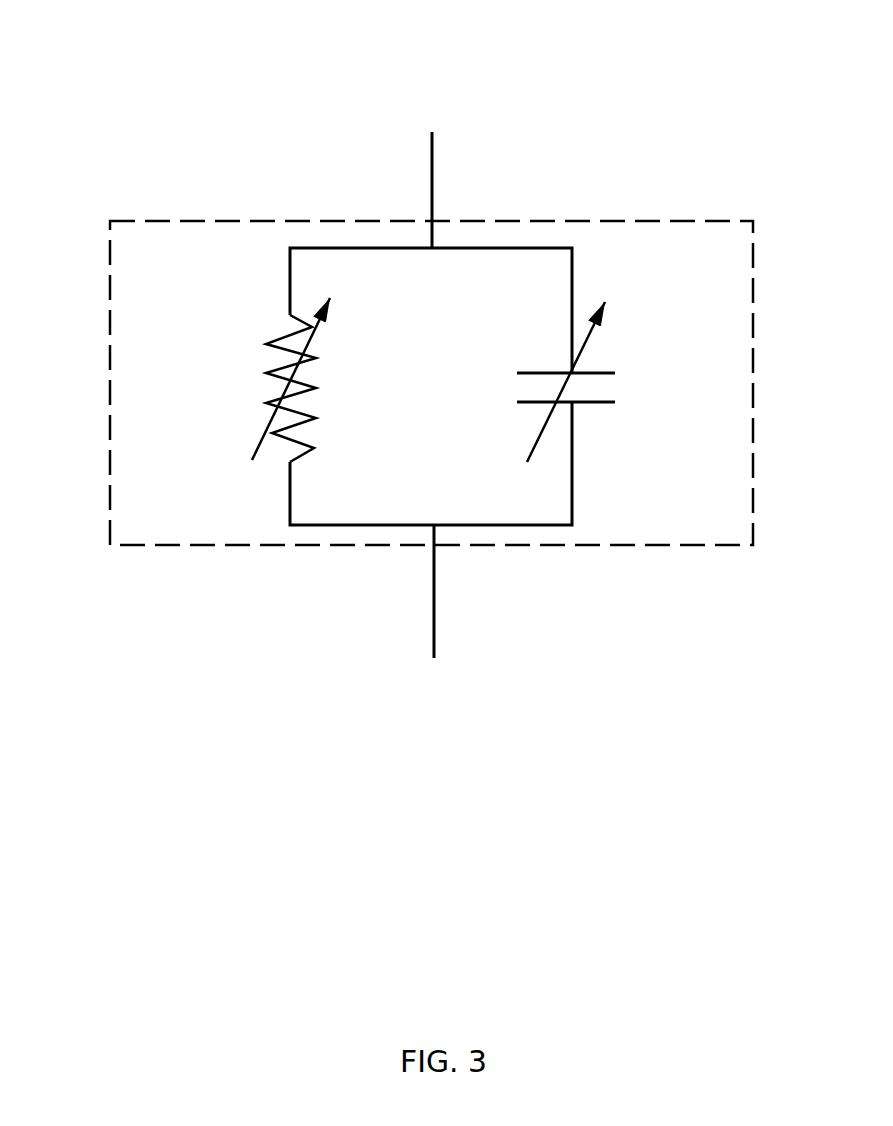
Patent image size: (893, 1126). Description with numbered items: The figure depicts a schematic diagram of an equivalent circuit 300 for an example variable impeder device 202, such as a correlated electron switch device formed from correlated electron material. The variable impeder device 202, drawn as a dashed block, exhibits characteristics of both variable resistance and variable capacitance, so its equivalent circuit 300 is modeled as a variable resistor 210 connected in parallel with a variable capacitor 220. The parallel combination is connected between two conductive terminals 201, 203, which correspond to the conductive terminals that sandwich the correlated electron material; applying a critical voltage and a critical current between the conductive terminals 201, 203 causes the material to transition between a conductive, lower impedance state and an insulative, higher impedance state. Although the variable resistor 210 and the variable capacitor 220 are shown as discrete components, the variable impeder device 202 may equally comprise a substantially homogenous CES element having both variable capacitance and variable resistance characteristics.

The equivalent circuit 300 is at (105, 40).
The conductive terminal 201 is at (442, 178).
The variable impeder device 202 is at (108, 247).
The conductive terminal 203 is at (425, 632).
The variable resistor 210 is at (252, 367).
The variable capacitor 220 is at (630, 382).